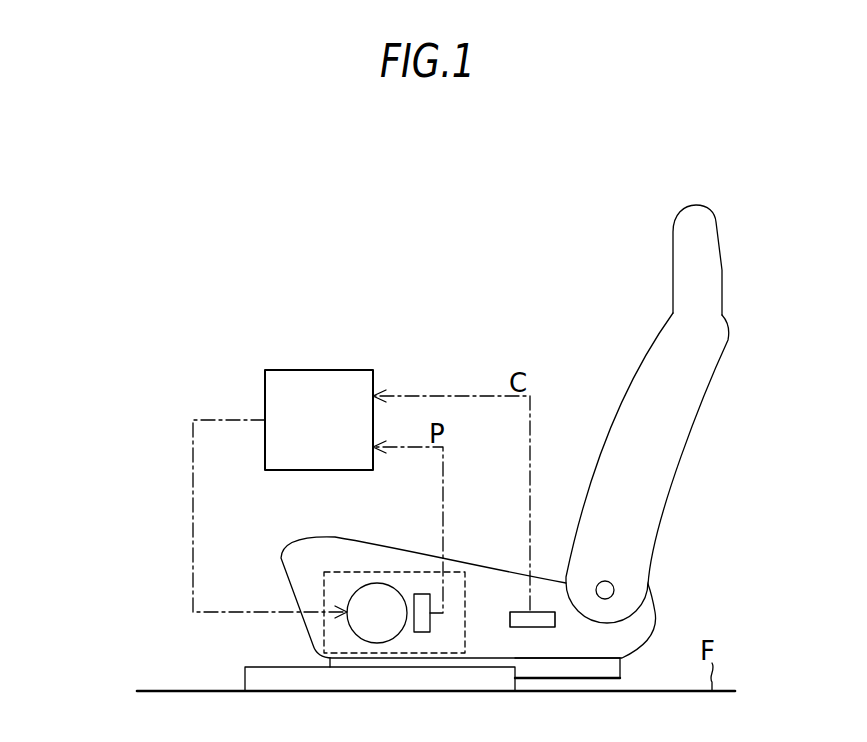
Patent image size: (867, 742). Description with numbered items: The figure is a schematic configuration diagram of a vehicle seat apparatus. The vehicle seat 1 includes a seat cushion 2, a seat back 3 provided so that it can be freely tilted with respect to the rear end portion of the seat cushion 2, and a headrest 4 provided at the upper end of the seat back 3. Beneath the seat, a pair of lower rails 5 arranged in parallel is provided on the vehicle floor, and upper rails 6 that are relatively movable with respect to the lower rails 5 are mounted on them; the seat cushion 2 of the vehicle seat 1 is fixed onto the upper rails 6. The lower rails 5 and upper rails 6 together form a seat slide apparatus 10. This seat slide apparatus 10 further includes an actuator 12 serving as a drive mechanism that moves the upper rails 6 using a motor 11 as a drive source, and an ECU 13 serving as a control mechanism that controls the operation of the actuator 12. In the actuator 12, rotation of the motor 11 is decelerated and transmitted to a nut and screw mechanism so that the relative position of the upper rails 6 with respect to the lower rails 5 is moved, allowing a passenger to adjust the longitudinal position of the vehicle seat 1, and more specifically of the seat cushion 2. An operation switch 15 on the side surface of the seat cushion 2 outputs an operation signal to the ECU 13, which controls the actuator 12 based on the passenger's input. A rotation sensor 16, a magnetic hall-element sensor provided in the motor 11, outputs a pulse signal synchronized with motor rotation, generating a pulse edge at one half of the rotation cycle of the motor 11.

The vehicle seat 1 is at (557, 295).
The seat cushion 2 is at (278, 553).
The seat back 3 is at (686, 443).
The headrest 4 is at (724, 270).
The lower rails 5 is at (245, 673).
The upper rails 6 is at (621, 665).
The seat slide apparatus 10 is at (88, 392).
The motor 11 is at (352, 630).
The actuator 12 is at (342, 572).
The ECU 13 is at (320, 370).
The operation switch 15 is at (515, 610).
The rotation sensor 16 is at (422, 594).